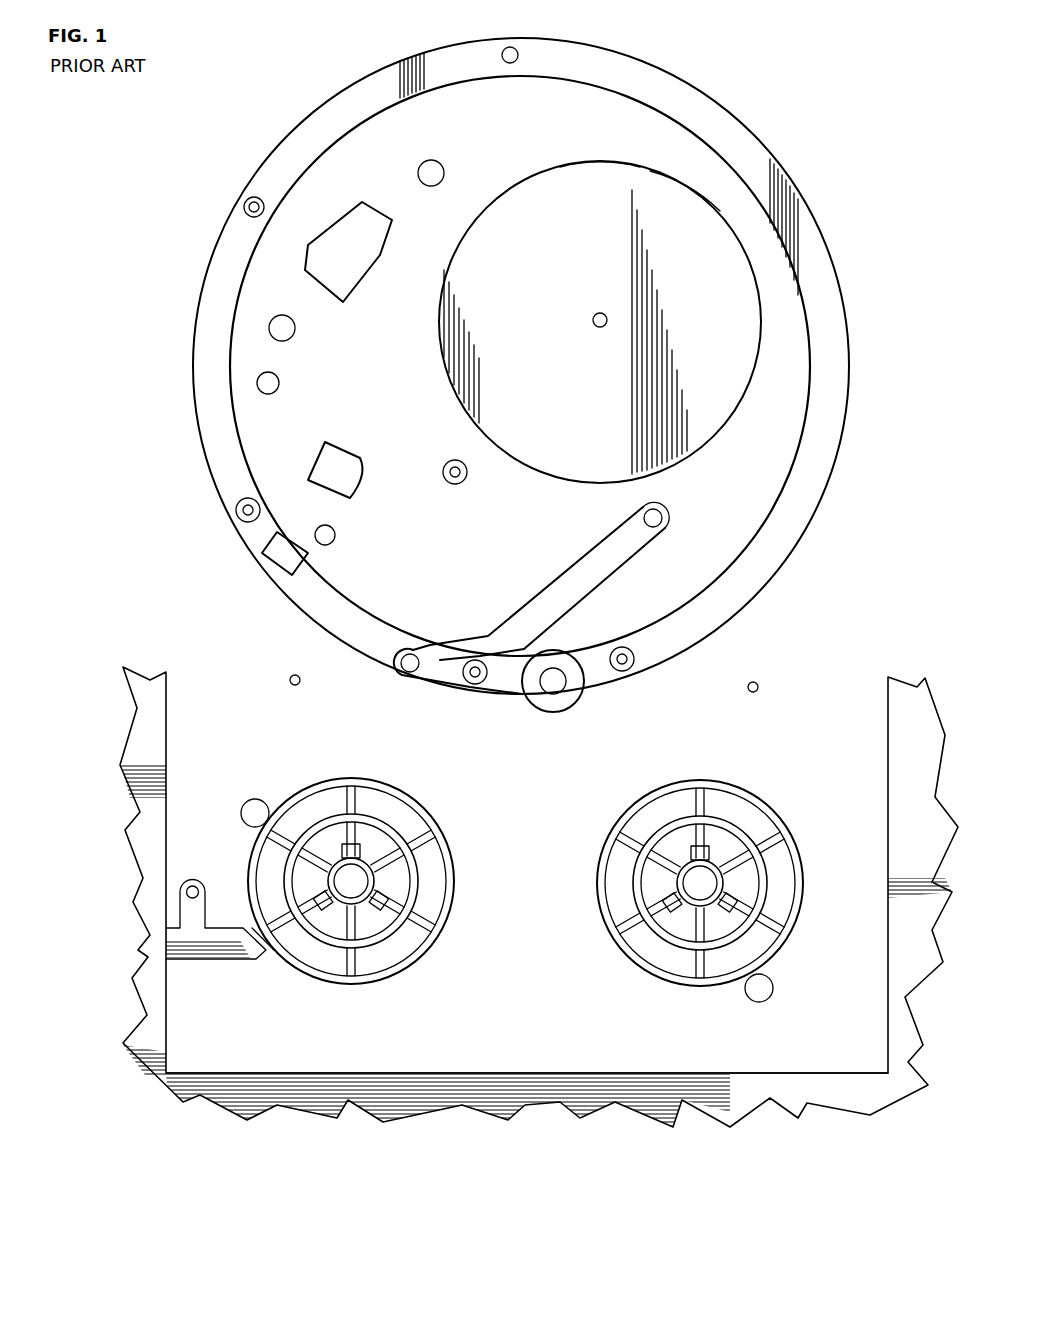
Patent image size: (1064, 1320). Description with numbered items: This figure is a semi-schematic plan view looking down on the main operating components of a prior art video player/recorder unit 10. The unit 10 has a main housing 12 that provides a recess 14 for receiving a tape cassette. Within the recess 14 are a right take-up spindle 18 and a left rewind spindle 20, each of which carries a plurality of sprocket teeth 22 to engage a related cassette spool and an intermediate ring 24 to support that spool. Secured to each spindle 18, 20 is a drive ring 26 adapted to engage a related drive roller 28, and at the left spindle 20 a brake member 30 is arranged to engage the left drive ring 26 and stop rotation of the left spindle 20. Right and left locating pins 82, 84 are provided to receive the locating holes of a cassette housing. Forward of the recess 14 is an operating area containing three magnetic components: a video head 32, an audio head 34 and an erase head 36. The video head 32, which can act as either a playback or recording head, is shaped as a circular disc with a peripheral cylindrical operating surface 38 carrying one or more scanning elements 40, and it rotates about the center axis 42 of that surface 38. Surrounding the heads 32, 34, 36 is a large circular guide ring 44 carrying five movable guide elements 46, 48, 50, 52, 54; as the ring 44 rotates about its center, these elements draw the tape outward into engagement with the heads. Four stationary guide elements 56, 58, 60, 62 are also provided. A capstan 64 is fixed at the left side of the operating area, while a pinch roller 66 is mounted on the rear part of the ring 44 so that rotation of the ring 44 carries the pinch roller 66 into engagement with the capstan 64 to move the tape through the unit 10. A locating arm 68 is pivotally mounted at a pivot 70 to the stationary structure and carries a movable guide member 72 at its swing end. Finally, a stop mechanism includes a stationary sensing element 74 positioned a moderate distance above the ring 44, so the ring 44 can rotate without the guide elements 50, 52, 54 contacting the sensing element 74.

The unit 10 is at (226, 555).
The main housing 12 is at (525, 1148).
The recess 14 is at (566, 1070).
The right take-up spindle 18 is at (706, 880).
The left rewind spindle 20 is at (360, 872).
The sprocket teeth 22 is at (705, 848).
The intermediate ring 24 is at (660, 832).
The drive ring 26 is at (612, 826).
The drive roller 28 is at (255, 803).
The brake member 30 is at (240, 947).
The video head 32 is at (578, 172).
The audio head 34 is at (378, 240).
The erase head 36 is at (338, 455).
The peripheral cylindrically shaped operating surface 38 is at (722, 432).
The scanning element 40 is at (690, 186).
The center axis 42 is at (596, 326).
The guide ring 44 is at (728, 618).
The guide element 46 is at (622, 647).
The guide element 48 is at (472, 684).
The guide element 50 is at (236, 510).
The guide element 52 is at (244, 207).
The guide element 54 is at (514, 48).
The stationary guide element 56 is at (462, 482).
The stationary guide element 58 is at (335, 533).
The stationary guide element 60 is at (296, 328).
The stationary guide element 62 is at (440, 165).
The capstan 64 is at (280, 383).
The pinch roller 66 is at (572, 698).
The locating arm 68 is at (585, 568).
The pivot 70 is at (663, 518).
The movable guide member 72 is at (408, 653).
The sensing element 74 is at (278, 562).
The right locating pin 82 is at (756, 684).
The left locating pin 84 is at (291, 678).